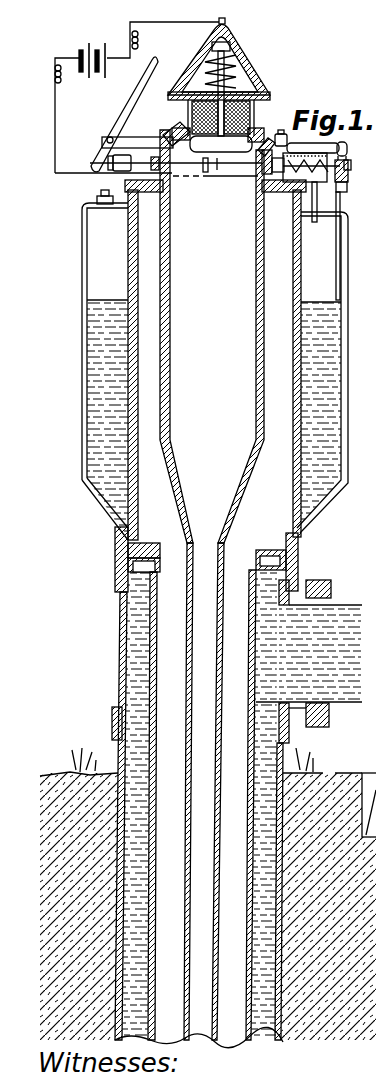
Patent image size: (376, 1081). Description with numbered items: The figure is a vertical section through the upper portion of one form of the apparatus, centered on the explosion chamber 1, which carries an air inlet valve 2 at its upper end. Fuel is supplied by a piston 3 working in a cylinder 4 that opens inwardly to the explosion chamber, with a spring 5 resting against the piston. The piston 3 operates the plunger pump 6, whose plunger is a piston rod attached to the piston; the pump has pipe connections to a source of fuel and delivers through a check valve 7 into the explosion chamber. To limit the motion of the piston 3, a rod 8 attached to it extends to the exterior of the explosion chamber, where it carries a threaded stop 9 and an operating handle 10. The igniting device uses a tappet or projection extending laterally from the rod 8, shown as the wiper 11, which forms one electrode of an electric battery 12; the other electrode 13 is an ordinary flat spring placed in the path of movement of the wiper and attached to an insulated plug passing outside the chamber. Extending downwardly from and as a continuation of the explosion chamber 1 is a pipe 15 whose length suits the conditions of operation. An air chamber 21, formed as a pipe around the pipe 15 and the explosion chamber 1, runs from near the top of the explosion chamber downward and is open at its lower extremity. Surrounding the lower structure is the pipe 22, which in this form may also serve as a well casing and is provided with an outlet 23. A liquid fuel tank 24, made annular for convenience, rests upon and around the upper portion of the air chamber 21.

The explosion chamber 1 is at (215, 336).
The air inlet valve 2 is at (232, 146).
The piston 3 is at (271, 168).
The cylinder 4 is at (294, 154).
The spring 5 is at (333, 157).
The plunger pump 6 is at (349, 183).
The check valve 7 is at (292, 134).
The rod 8 is at (238, 180).
The threaded stop 9 is at (131, 159).
The operating handle 10 is at (125, 122).
The wiper 11 is at (201, 180).
The electric battery 12 is at (137, 97).
The electrode 13 is at (211, 158).
The pipe 15 is at (204, 791).
The air chamber 21 is at (237, 780).
The pipe 22 is at (280, 974).
The outlet 23 is at (241, 805).
The liquid fuel tank 24 is at (341, 401).